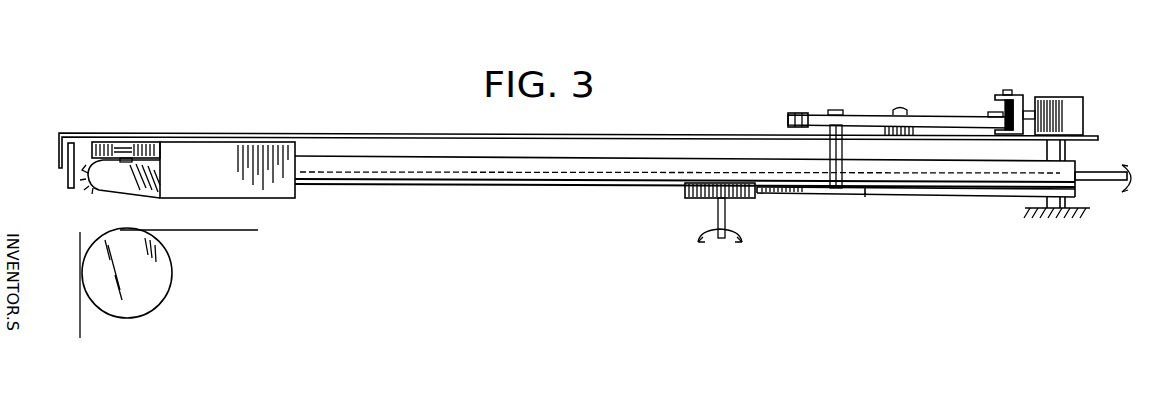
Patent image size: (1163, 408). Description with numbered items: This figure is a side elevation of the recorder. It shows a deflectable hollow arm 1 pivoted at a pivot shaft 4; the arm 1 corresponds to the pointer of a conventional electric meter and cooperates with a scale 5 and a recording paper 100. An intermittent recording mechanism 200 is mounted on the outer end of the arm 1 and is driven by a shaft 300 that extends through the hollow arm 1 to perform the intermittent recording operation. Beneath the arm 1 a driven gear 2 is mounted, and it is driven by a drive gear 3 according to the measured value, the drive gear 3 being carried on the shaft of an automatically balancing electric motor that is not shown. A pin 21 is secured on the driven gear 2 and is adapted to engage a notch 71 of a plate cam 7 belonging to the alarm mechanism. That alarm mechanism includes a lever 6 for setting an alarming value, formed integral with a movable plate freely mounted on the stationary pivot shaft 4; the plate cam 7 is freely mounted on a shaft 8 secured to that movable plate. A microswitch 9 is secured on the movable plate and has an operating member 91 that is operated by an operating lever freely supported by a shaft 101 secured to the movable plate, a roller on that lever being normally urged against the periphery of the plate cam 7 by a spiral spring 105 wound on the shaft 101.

The arm 1 is at (374, 185).
The driven gear 2 is at (818, 196).
The drive gear 3 is at (690, 198).
The pivot shaft 4 is at (1058, 213).
The scale 5 is at (83, 145).
The lever 6 is at (345, 133).
The plate cam 7 is at (850, 116).
The shaft 8 is at (903, 95).
The microswitch 9 is at (1050, 97).
The pin 21 is at (833, 110).
The notch 71 is at (800, 113).
The operating member 91 is at (1028, 110).
The recording paper 100 is at (200, 224).
The shaft 101 is at (1006, 91).
The spiral spring 105 is at (1009, 114).
The intermittent recording mechanism 200 is at (272, 190).
The shaft 300 is at (1103, 172).